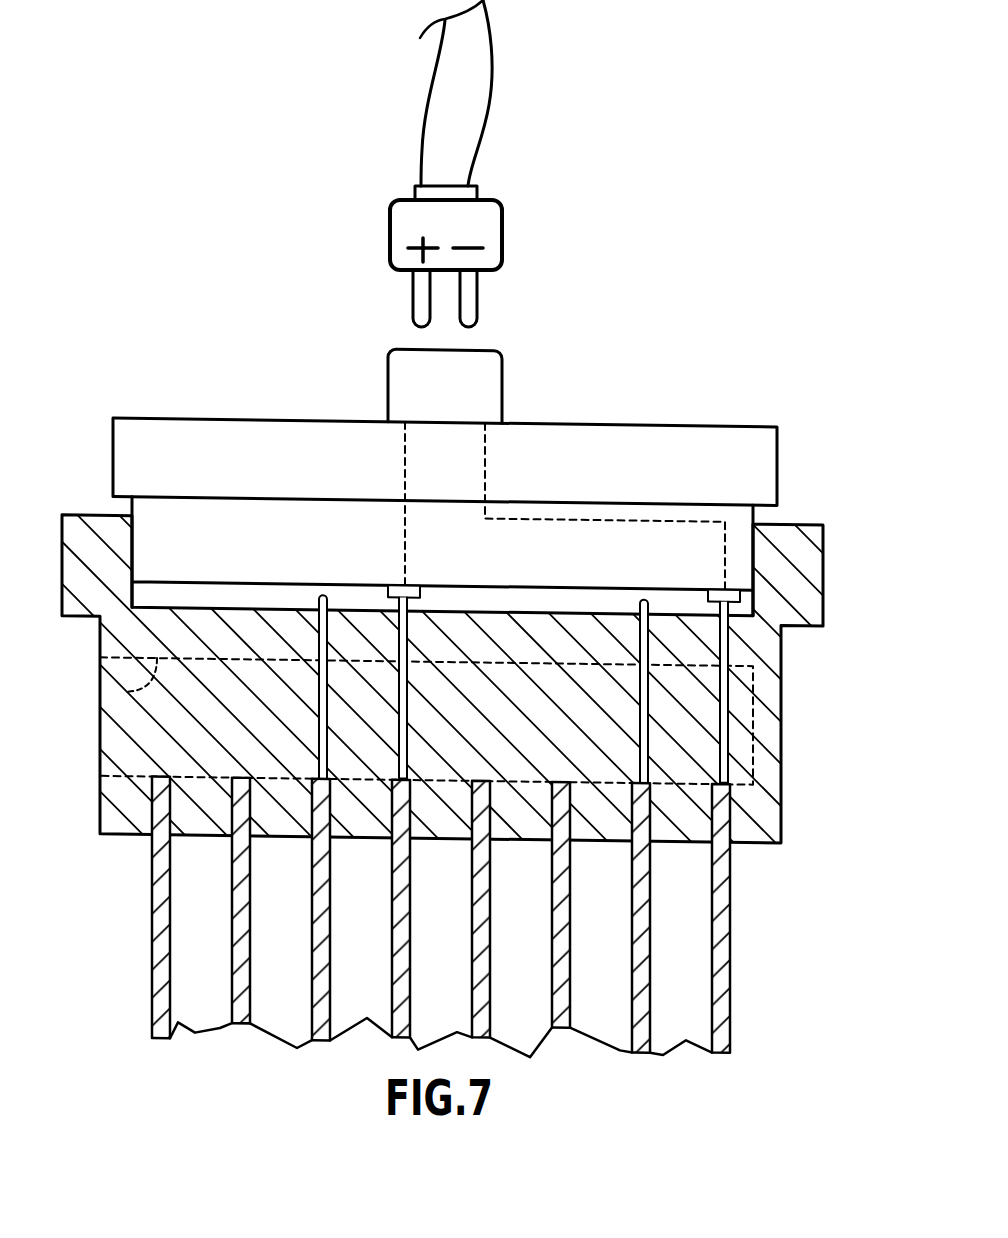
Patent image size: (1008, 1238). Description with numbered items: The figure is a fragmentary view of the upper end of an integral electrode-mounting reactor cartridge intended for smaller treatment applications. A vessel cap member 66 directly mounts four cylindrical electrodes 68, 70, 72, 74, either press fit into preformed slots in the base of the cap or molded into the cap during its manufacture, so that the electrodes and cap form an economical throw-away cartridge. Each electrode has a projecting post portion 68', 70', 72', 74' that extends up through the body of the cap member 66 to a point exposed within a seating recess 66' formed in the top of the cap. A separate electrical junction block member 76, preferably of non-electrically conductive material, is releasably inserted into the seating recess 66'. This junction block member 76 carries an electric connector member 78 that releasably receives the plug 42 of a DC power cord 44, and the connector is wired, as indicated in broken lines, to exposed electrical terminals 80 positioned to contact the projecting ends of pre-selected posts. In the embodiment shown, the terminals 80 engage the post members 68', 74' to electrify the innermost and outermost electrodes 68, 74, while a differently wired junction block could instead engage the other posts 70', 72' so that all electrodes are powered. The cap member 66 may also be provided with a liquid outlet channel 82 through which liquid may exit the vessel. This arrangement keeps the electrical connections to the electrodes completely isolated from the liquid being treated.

The power cord 44 is at (498, 52).
The plug member 42 is at (502, 232).
The electric connector member 78 is at (502, 370).
The electrical junction block member 76 is at (681, 416).
The vessel cap member 66 is at (504, 681).
The seating recess 66' is at (442, 556).
The liquid outlet channel 82 is at (122, 688).
The electrical terminals 80 is at (394, 578).
The projecting post portion 72' is at (314, 649).
The projecting post portion 74' is at (428, 657).
The projecting post portion 70' is at (630, 654).
The projecting post portion 68' is at (781, 693).
The cylindrical electrode 74 is at (503, 909).
The cylindrical electrode 72 is at (583, 905).
The cylindrical electrode 70 is at (664, 918).
The cylindrical electrode 68 is at (744, 918).